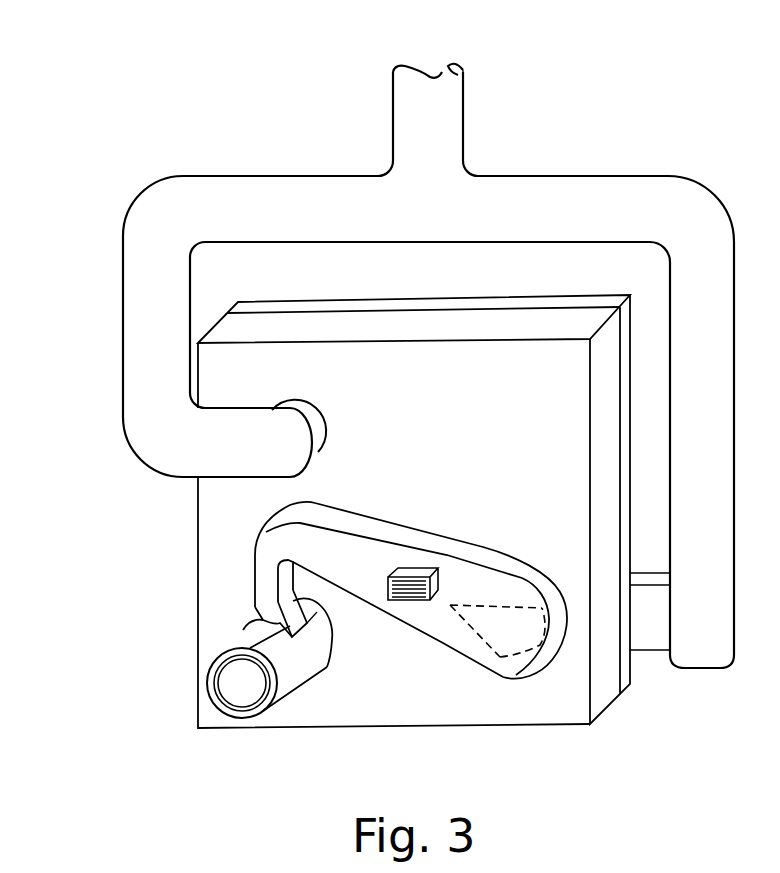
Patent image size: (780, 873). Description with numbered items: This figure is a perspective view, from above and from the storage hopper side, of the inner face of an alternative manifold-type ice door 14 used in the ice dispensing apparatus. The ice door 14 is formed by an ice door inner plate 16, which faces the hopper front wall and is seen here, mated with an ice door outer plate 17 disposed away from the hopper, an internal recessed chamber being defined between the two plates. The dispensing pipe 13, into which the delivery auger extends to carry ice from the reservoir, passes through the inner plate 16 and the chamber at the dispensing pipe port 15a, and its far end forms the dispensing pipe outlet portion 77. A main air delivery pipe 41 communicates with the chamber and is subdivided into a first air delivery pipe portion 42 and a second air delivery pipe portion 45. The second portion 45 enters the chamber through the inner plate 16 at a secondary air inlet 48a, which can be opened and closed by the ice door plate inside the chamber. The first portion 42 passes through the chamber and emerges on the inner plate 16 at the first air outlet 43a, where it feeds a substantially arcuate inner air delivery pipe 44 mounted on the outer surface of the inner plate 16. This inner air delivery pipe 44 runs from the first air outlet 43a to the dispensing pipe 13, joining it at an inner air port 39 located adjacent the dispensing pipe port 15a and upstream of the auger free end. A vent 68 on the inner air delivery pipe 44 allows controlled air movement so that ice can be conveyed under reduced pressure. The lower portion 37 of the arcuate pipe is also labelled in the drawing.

The dispensing pipe 13 is at (287, 670).
The ice door 14 is at (568, 320).
The dispensing pipe port 15a is at (330, 628).
The ice door inner plate 16 is at (577, 512).
The ice door outer plate 17 is at (537, 297).
The lower arm portion 37 is at (407, 627).
The inner air port 39 is at (243, 633).
The main air delivery pipe 41 is at (445, 100).
The first air delivery pipe portion 42 is at (725, 277).
The first air outlet 43a is at (500, 657).
The inner air delivery pipe 44 is at (410, 548).
The second air delivery pipe portion 45 is at (298, 198).
The secondary air inlet 48a is at (310, 418).
The vent 68 is at (443, 558).
The dispensing pipe outlet portion 77 is at (307, 633).